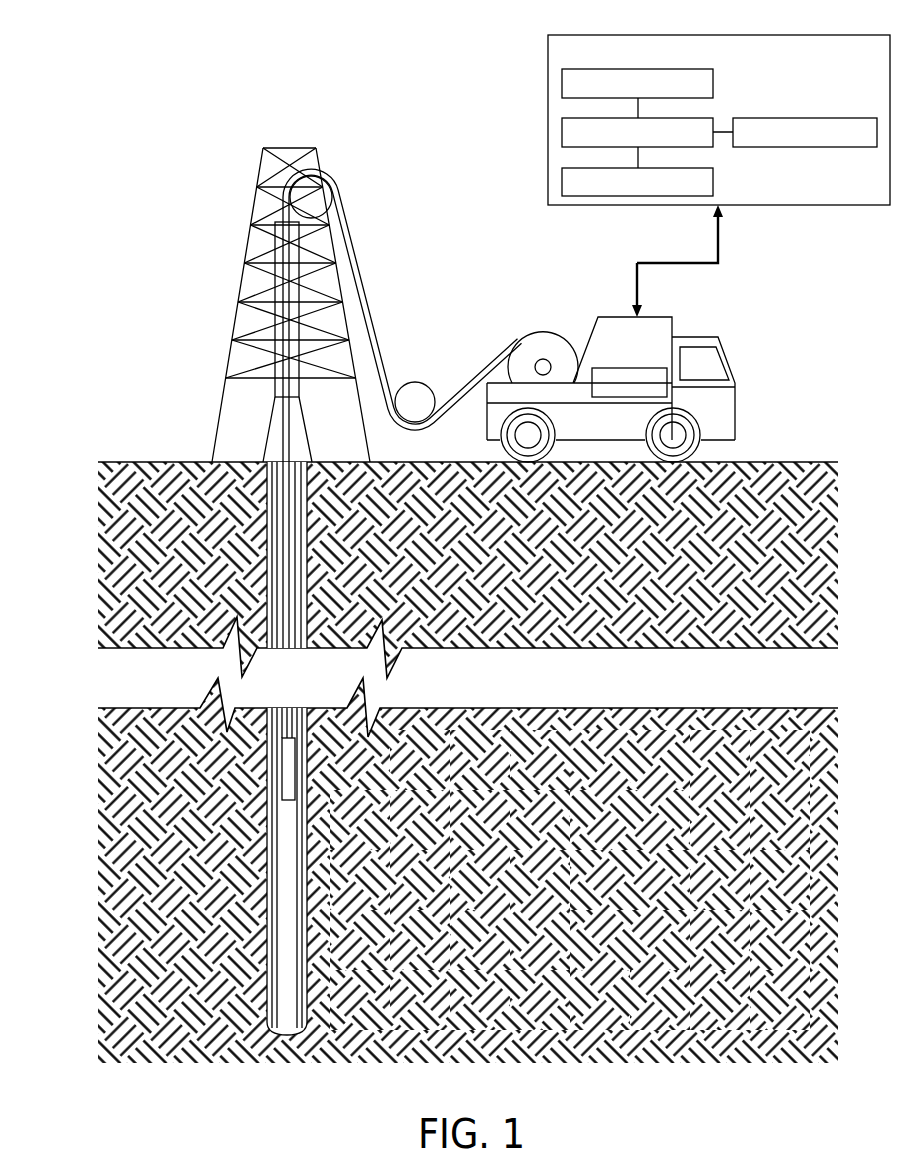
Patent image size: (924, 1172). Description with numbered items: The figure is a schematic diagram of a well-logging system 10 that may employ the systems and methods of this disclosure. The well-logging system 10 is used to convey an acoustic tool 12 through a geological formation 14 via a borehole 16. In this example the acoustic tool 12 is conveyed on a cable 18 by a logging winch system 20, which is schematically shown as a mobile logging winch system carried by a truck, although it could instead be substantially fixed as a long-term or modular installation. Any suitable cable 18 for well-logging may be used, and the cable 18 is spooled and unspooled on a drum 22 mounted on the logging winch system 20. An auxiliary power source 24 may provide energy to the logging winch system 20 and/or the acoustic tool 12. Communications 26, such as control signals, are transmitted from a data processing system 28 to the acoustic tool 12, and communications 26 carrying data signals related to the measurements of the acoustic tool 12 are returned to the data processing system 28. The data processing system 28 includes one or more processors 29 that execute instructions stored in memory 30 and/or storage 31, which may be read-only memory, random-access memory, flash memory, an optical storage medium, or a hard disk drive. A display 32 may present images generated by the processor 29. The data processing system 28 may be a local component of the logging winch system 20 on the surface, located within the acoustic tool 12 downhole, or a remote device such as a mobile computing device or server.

The well-logging system 10 is at (172, 206).
The acoustic tool 12 is at (278, 751).
The geological formation 14 is at (113, 816).
The borehole 16 is at (262, 518).
The cable 18 is at (380, 298).
The logging winch system 20 is at (615, 312).
The drum 22 is at (538, 334).
The auxiliary power source 24 is at (629, 368).
The communications 26 is at (722, 252).
The data processing system 28 is at (718, 35).
The processor 29 is at (690, 118).
The memory 30 is at (566, 81).
The storage 31 is at (708, 180).
The display 32 is at (805, 118).